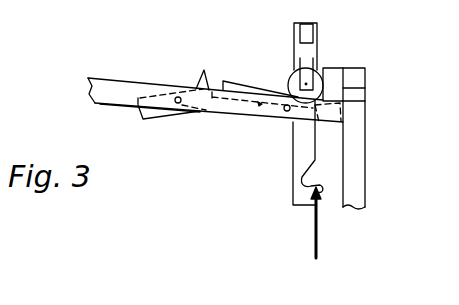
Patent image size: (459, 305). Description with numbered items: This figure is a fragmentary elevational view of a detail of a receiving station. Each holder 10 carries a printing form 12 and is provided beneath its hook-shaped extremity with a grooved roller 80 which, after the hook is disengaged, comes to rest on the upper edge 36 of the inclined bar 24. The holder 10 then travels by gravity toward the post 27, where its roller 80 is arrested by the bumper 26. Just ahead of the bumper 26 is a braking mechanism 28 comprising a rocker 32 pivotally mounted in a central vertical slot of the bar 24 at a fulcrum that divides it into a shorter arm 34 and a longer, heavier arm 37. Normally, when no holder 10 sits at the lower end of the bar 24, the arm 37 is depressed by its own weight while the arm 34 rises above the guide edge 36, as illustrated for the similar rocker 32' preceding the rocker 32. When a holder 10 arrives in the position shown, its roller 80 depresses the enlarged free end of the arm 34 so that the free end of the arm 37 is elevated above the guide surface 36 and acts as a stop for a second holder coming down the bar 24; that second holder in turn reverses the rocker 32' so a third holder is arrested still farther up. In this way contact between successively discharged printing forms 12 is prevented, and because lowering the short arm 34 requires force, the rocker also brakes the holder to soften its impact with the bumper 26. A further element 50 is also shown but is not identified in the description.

The holder 10 is at (293, 150).
The printing form 12 is at (313, 241).
The bar 24 is at (121, 98).
The bumper 26 is at (333, 71).
The post 27 is at (356, 191).
The braking mechanism 28 is at (277, 72).
The rocker 32 is at (225, 122).
The rocker 32' is at (182, 57).
The shorter arm 34 is at (337, 107).
The upper edge 36 is at (110, 80).
The longer arm 37 is at (228, 80).
The pivot pin 50 is at (285, 111).
The grooved roller 80 is at (362, 88).